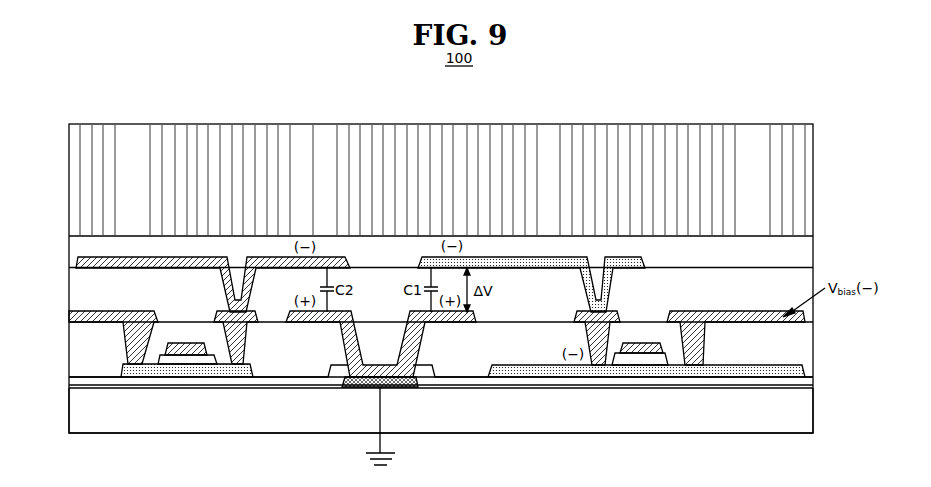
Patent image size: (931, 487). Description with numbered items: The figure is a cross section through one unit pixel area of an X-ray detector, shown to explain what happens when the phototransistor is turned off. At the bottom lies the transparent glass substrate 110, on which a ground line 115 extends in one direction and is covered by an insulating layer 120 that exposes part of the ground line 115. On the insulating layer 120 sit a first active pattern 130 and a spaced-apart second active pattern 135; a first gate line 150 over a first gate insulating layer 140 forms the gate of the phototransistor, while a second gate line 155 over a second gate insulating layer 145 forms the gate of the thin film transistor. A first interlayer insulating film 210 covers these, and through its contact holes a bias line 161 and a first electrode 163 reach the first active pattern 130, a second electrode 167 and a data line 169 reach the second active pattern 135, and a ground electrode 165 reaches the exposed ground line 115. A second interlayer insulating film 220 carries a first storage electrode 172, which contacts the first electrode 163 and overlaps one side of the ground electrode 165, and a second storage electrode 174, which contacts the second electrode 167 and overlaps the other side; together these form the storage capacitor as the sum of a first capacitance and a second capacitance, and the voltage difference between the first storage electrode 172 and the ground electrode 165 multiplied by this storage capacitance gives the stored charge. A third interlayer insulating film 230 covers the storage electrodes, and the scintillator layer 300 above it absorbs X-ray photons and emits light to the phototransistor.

The substrate 110 is at (803, 410).
The ground line 115 is at (352, 388).
The insulating layer 120 is at (772, 382).
The first active pattern 130 is at (717, 378).
The second active pattern 135 is at (143, 370).
The first gate insulating layer 140 is at (663, 357).
The second gate insulating layer 145 is at (173, 360).
The first gate line 150 is at (660, 347).
The second gate line 155 is at (200, 350).
The bias line 161 is at (805, 312).
The first electrode 163 is at (617, 312).
The ground electrode 165 is at (448, 320).
The second electrode 167 is at (237, 365).
The data line 169 is at (75, 317).
The first storage electrode 172 is at (643, 262).
The second storage electrode 174 is at (79, 260).
The first interlayer insulating film 210 is at (75, 335).
The second interlayer insulating film 220 is at (75, 287).
The third interlayer insulating film 230 is at (76, 243).
The scintillator layer 300 is at (806, 183).